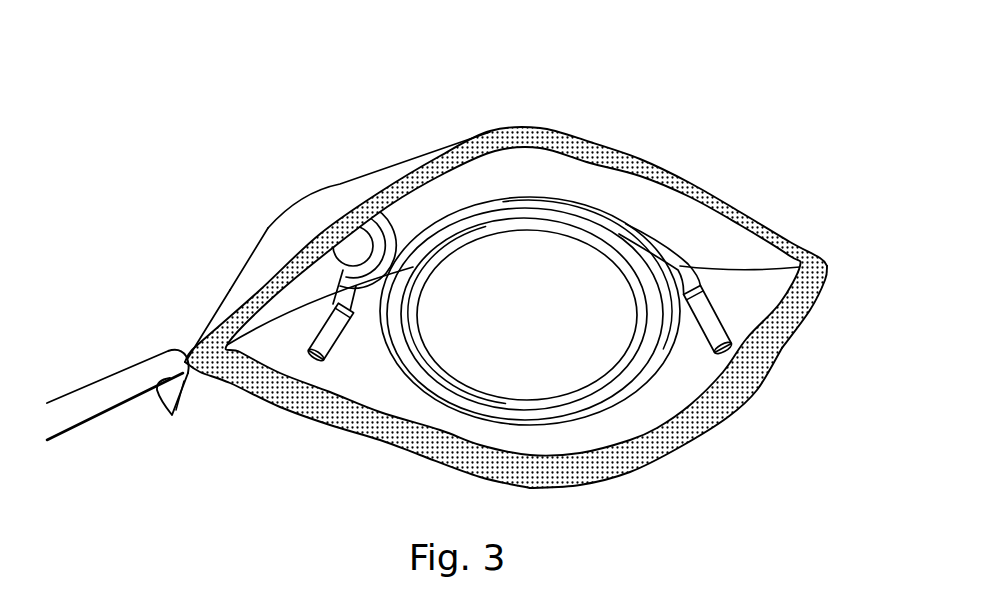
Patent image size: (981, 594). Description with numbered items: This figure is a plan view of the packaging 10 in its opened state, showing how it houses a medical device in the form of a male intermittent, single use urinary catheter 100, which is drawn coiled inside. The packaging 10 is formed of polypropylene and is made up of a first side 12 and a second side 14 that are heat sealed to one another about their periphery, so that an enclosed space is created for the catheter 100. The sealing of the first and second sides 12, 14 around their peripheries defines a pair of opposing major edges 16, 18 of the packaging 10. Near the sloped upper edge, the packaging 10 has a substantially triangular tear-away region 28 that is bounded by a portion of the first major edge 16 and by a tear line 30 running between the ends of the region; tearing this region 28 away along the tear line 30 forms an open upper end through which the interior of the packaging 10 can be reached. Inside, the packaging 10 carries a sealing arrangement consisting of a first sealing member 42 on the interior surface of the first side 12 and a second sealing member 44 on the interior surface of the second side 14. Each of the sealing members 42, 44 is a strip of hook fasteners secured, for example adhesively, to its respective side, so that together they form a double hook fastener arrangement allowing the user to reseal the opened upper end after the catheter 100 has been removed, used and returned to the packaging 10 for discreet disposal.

The packaging 10 is at (546, 296).
The first side 12 is at (298, 222).
The second side 14 is at (333, 432).
The first major edge 16 is at (820, 264).
The second major edge 18 is at (243, 267).
The tear-away region 28 is at (80, 410).
The tear line 30 is at (213, 327).
The first sealing member 42 is at (567, 136).
The second sealing member 44 is at (682, 444).
The catheter 100 is at (633, 330).